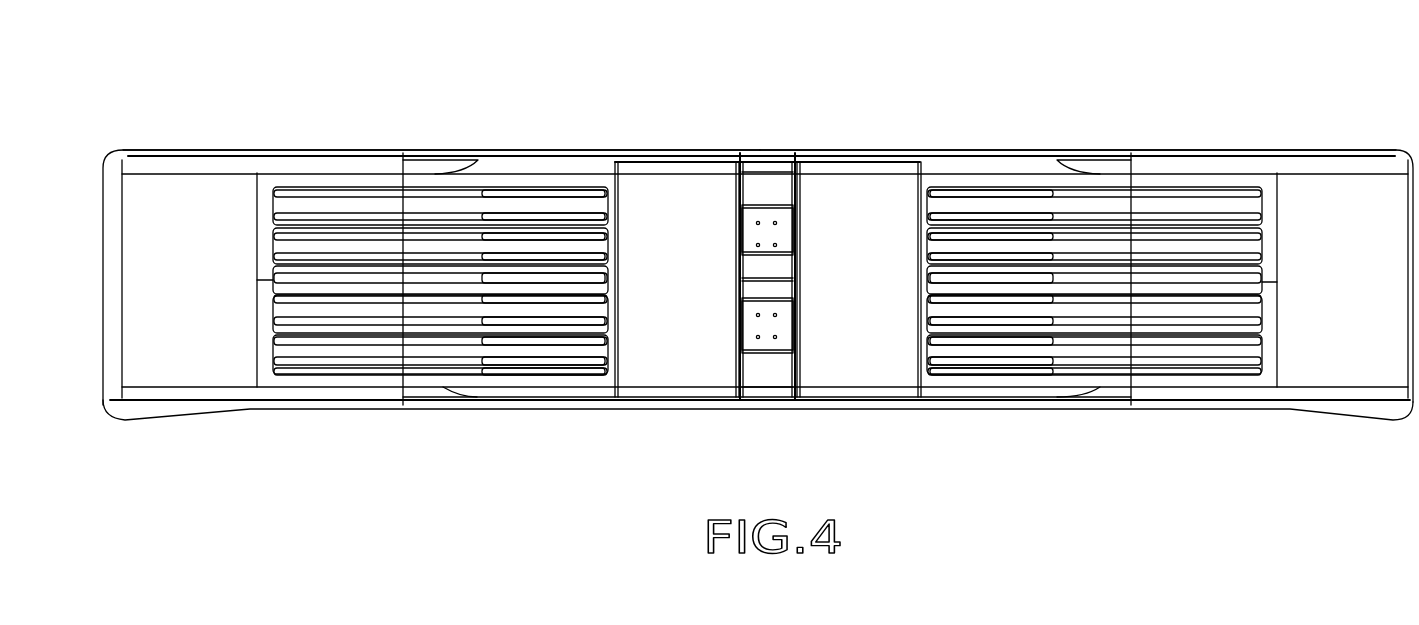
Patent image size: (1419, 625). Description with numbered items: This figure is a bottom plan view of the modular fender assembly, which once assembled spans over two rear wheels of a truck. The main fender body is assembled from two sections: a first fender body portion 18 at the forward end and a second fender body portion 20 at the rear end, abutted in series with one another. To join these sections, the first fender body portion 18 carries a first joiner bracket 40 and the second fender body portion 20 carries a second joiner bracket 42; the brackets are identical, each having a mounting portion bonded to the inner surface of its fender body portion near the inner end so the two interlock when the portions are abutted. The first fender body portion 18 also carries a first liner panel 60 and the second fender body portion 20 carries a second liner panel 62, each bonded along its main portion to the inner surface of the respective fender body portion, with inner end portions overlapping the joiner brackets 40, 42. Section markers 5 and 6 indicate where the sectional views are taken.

The first fender body portion 18 is at (422, 150).
The second fender body portion 20 is at (1133, 153).
The first joiner bracket 40 is at (752, 236).
The second joiner bracket 42 is at (797, 330).
The first liner panel 60 is at (440, 354).
The second liner panel 62 is at (1112, 316).
The section line 5- 5 is at (770, 90).
The section line 6- 6 is at (173, 198).